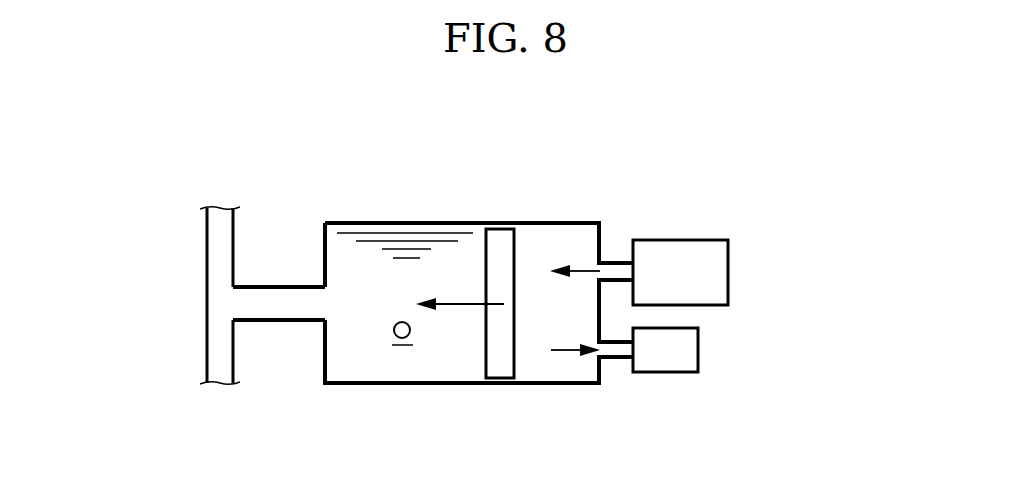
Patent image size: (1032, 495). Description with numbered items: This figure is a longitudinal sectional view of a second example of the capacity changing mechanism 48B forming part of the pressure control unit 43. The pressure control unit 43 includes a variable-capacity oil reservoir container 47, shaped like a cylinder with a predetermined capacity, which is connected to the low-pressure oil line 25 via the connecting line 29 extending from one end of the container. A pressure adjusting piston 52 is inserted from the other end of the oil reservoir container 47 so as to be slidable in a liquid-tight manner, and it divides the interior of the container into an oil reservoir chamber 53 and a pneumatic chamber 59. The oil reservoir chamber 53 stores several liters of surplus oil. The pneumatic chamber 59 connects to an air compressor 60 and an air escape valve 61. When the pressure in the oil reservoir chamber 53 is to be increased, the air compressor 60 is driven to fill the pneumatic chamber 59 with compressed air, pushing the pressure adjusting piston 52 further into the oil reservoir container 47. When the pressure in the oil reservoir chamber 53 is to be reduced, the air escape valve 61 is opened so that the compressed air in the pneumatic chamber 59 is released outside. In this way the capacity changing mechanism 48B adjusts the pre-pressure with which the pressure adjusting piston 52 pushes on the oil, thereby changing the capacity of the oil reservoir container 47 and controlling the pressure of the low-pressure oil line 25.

The pressure control unit 43 is at (321, 163).
The low-pressure oil line 25 is at (207, 240).
The connecting line 29 is at (277, 287).
The oil reservoir container 47 is at (435, 222).
The pressure adjusting piston 52 is at (502, 240).
The oil reservoir chamber 53 is at (455, 372).
The pneumatic chamber 59 is at (557, 372).
The air compressor 60 is at (728, 270).
The air escape valve 61 is at (698, 348).
The capacity changing mechanism 48B is at (808, 253).